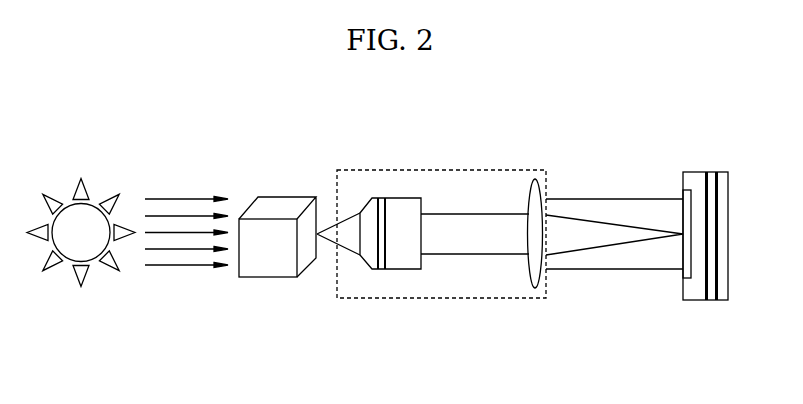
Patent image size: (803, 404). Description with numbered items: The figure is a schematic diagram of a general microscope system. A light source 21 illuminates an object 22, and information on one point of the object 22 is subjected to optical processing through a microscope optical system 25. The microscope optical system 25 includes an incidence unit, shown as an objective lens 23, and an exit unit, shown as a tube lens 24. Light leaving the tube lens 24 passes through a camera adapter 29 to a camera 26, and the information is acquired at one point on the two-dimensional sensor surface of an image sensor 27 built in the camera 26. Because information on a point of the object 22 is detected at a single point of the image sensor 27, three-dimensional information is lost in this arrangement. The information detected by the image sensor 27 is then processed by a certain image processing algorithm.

The light source 21 is at (65, 260).
The object 22 is at (265, 280).
The objective lens 23 is at (380, 270).
The tube lens 24 is at (533, 290).
The microscope optical system 25 is at (443, 168).
The camera 26 is at (708, 303).
The image sensor 27 is at (691, 253).
The camera adapter 29 is at (600, 198).